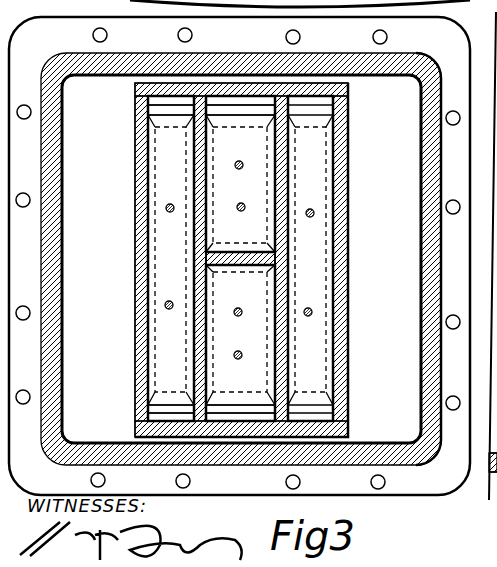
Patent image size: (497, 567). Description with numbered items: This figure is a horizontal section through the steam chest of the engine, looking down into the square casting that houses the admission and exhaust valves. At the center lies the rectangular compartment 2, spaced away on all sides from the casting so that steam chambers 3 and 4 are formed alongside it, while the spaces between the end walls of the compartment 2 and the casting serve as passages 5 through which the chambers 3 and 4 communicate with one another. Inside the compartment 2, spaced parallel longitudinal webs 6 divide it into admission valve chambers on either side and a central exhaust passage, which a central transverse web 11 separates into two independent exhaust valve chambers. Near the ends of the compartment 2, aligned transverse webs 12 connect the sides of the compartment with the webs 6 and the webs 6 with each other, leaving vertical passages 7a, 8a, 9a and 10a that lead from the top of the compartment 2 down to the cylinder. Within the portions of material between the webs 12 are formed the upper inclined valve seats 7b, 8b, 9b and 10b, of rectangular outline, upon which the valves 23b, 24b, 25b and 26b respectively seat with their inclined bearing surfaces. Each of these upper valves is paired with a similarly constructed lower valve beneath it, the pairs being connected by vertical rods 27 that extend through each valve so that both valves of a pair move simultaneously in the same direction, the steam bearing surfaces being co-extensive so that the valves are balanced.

The compartment 2 is at (336, 232).
The steam chamber 3 is at (239, 256).
The steam chamber 4 is at (241, 259).
The passages 5 is at (218, 82).
The longitudinal webs 6 is at (203, 188).
The vertical passage 7a is at (347, 96).
The upper inclined valve seat 7b is at (334, 258).
The vertical passage 8a is at (155, 102).
The upper inclined valve seat 8b is at (157, 288).
The vertical passage 9a is at (242, 102).
The upper inclined valve seat 9b is at (276, 178).
The vertical passage 10a is at (242, 418).
The upper inclined valve seat 10b is at (268, 306).
The central transverse web 11 is at (240, 266).
The transverse webs 12 is at (358, 394).
The valve 23b is at (310, 260).
The valve 24b is at (171, 260).
The valve 25b is at (240, 183).
The valve 26b is at (240, 335).
The vertical rods 27 is at (170, 204).